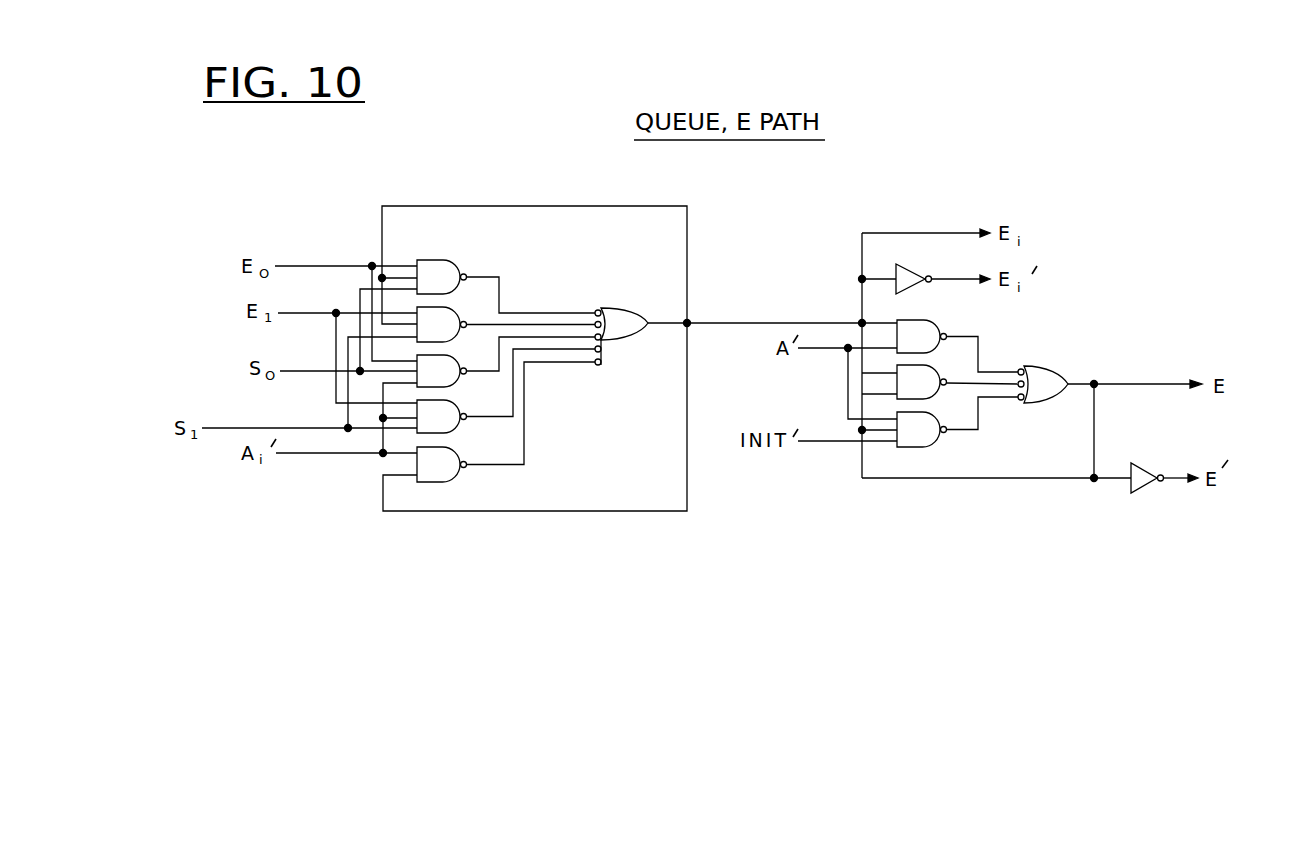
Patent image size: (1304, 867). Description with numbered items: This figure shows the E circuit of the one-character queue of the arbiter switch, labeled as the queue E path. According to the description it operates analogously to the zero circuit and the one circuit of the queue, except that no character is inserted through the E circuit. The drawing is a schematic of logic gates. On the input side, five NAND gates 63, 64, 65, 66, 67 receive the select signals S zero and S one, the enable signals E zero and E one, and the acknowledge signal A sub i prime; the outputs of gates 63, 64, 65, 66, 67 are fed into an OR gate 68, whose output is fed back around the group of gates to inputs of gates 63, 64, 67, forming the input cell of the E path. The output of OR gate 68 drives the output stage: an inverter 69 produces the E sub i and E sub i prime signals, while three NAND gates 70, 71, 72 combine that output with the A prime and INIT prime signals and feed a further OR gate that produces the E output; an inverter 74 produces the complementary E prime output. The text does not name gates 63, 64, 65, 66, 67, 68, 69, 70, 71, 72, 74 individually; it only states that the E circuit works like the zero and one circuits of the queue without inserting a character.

The NAND gate 63 is at (448, 263).
The NAND gate 64 is at (448, 311).
The NAND gate 65 is at (448, 357).
The NAND gate 66 is at (455, 401).
The NAND gate 67 is at (462, 449).
The OR gate 68 is at (642, 345).
The inverter 69 is at (915, 272).
The NAND gate 70 is at (940, 322).
The NAND gate 71 is at (930, 367).
The NAND gate 72 is at (935, 414).
The inverter 74 is at (1145, 488).